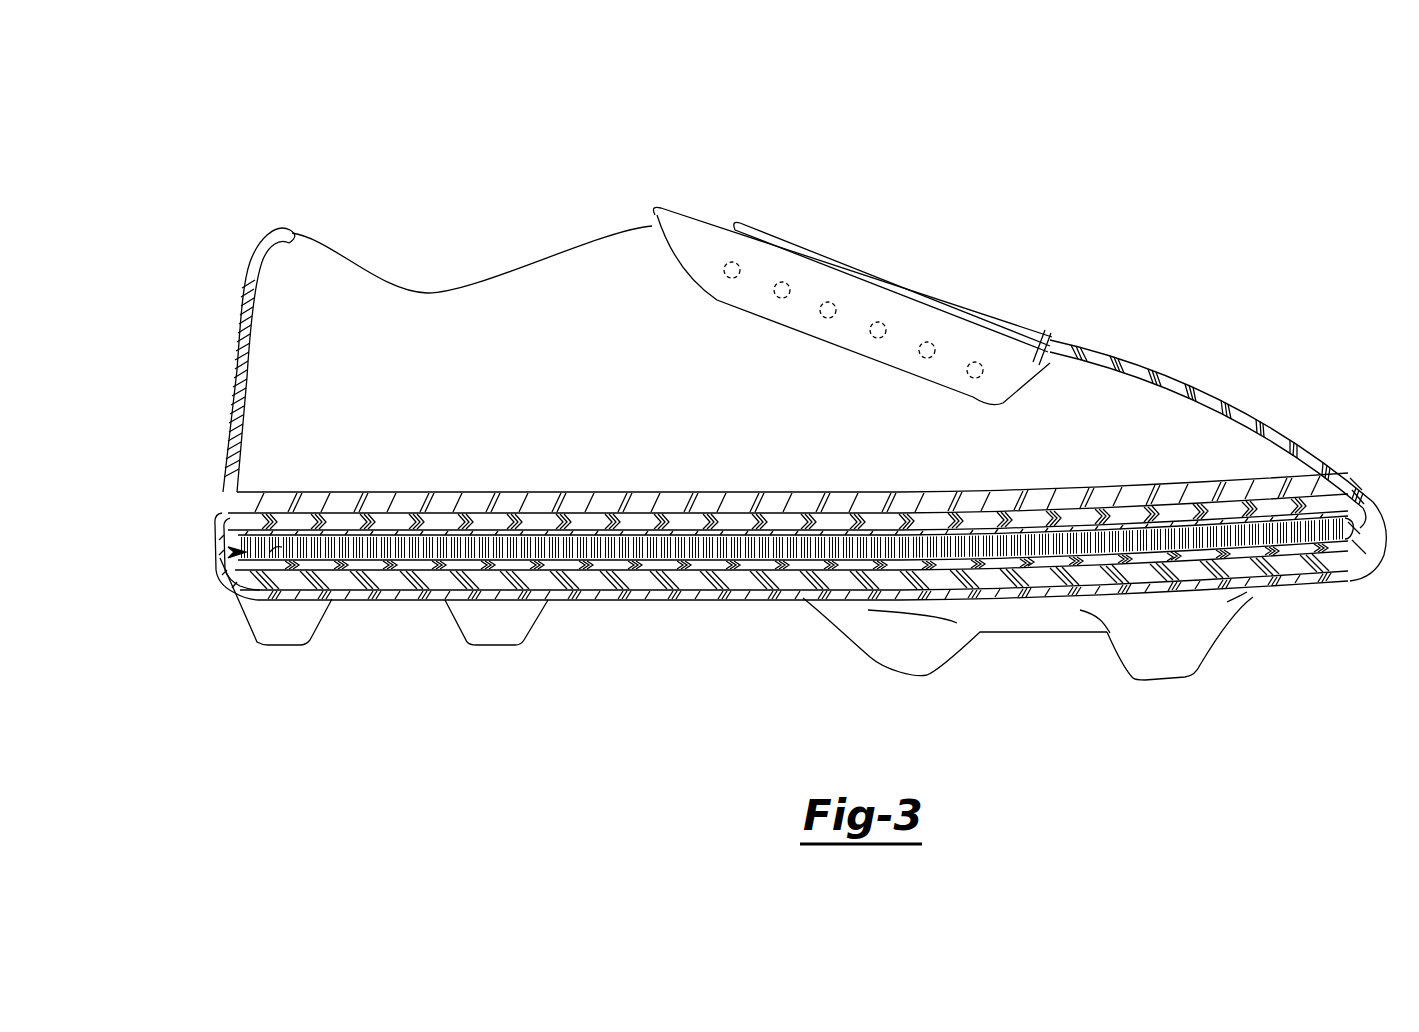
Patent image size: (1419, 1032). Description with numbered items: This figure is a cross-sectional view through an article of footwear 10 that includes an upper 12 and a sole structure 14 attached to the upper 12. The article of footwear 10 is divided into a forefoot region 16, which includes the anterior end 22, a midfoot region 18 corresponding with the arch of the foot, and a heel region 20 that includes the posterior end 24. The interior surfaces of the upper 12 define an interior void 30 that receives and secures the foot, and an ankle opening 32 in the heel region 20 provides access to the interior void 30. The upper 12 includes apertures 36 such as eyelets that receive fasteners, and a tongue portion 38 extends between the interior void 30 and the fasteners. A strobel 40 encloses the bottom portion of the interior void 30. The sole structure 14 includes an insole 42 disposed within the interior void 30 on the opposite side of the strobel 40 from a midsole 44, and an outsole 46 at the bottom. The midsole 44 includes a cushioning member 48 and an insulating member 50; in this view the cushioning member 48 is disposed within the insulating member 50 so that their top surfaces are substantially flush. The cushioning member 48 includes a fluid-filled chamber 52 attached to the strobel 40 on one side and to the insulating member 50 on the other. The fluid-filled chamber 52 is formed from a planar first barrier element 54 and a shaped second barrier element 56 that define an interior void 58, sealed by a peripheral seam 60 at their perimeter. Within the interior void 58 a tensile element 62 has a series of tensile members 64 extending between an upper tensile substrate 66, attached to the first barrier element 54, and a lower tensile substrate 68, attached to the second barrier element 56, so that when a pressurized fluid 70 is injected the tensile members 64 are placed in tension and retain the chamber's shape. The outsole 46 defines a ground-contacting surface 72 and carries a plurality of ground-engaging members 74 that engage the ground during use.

The article of footwear 10 is at (1085, 172).
The upper 12 is at (1003, 302).
The sole structure 14 is at (983, 668).
The forefoot region 16 is at (1255, 600).
The midfoot region 18 is at (757, 600).
The heel region 20 is at (360, 610).
The anterior end 22 is at (1387, 540).
The posterior end 24 is at (217, 545).
The interior void 30 is at (438, 327).
The ankle opening 32 is at (283, 230).
The apertures 36 is at (728, 272).
The tongue portion 38 is at (810, 248).
The strobel 40 is at (238, 513).
The insole 42 is at (470, 492).
The midsole 44 is at (700, 690).
The outsole 46 is at (583, 600).
The cushioning member 48 is at (690, 568).
The insulating member 50 is at (645, 580).
The fluid-filled chamber 52 is at (1350, 545).
The first barrier element 54 is at (800, 528).
The second barrier element 56 is at (793, 570).
The interior void 58 is at (345, 540).
The peripheral seam 60 is at (225, 537).
The tensile element 62 is at (240, 552).
The tensile members 64 is at (400, 547).
The upper tensile substrate 66 is at (290, 530).
The lower tensile substrate 68 is at (270, 552).
The pressurized fluid 70 is at (345, 540).
The ground-contacting surface 72 is at (413, 600).
The ground-engaging members 74 is at (897, 672).